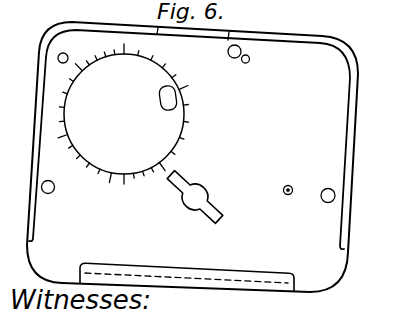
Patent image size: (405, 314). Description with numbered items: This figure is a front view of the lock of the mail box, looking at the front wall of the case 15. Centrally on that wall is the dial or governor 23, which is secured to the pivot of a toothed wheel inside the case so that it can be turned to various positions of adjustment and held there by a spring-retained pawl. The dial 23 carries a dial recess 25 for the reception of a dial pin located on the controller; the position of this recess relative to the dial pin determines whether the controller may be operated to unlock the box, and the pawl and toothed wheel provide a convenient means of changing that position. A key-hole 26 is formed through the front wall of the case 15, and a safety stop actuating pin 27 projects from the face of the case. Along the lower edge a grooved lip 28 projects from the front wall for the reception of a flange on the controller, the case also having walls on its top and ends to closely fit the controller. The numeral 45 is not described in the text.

The case 15 is at (359, 93).
The rim flange of casing 45 is at (236, 26).
The dial 23 is at (123, 119).
The dial recess 25 is at (160, 100).
The safety stop actuating pin 27 is at (250, 59).
The key-hole 26 is at (205, 190).
The grooved lip 28 is at (270, 283).